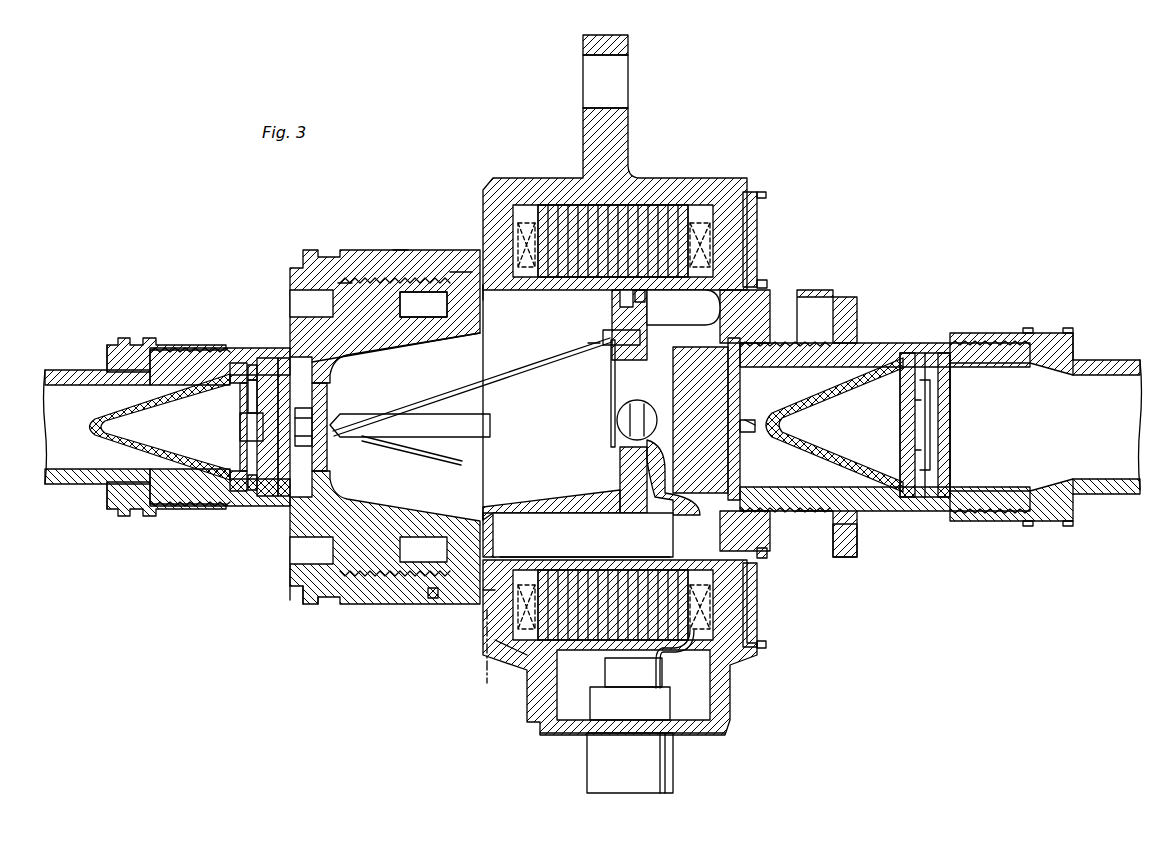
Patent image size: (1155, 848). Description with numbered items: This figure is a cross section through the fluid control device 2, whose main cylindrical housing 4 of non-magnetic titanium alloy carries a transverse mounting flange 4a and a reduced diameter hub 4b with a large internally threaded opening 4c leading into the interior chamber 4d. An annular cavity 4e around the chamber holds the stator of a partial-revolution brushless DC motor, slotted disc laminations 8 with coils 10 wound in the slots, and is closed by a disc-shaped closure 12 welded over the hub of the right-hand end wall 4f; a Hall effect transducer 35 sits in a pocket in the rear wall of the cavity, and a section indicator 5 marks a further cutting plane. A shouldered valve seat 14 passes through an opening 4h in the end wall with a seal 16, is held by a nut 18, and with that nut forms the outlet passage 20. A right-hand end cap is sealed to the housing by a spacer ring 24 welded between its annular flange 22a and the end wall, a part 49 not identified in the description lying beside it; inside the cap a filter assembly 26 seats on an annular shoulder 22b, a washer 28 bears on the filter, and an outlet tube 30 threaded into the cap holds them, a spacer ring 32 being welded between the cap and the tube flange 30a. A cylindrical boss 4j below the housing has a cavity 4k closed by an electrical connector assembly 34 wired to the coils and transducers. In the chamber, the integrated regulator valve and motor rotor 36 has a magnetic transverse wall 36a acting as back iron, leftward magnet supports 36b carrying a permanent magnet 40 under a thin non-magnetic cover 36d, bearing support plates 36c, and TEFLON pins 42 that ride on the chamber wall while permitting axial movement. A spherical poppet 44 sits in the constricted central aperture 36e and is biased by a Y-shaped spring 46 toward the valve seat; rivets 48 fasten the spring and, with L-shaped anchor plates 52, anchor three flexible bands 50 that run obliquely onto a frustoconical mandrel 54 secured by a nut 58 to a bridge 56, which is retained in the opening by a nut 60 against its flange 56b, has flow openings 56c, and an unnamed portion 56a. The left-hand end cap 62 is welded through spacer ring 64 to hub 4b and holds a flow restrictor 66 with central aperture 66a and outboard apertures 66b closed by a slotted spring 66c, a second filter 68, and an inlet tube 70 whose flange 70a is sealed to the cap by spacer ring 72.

The fluid control device 2 is at (645, 100).
The housing 4 is at (537, 178).
The mounting flange 4a is at (583, 45).
The reduced diameter hub 4b is at (400, 250).
The internally threaded opening 4c is at (345, 283).
The interior chamber 4d is at (508, 292).
The annular cavity 4e is at (762, 218).
The right-hand end wall 4f is at (762, 290).
The opening in end wall 4h is at (585, 544).
The cylindrical boss 4j is at (735, 728).
The cavity 4k is at (520, 683).
The section line 5- 5 is at (703, 177).
The circular disc laminations 8 is at (618, 212).
The coils 10 is at (708, 215).
The disc-shaped closure 12 is at (757, 240).
The valve seat 14 is at (762, 436).
The seal 16 is at (660, 385).
The nut 18 is at (734, 402).
The outlet passage 20 is at (760, 430).
The annular flange of end cap 22a is at (857, 530).
The annular shoulder 22b is at (896, 343).
The spacer ring 24 is at (815, 295).
The filter assembly 26 is at (833, 442).
The washer 28 is at (958, 353).
The outlet tube 30 is at (1107, 413).
The annular flange of outlet tube 30a is at (1077, 345).
The spacer ring 32 is at (1050, 332).
The electrical connector assembly 34 is at (587, 773).
The Hall effect transducer 35 is at (510, 645).
The integrated regulator valve and motor rotor 36 is at (497, 512).
The transverse wall 36a is at (620, 467).
The magnet supports 36b is at (516, 501).
The bearing support plates 36c is at (612, 301).
The cover 36d is at (489, 598).
The central aperture 36e is at (614, 427).
The permanent magnet 40 is at (548, 550).
The TEFLON pins 42 is at (645, 296).
The spherical poppet 44 is at (617, 420).
The Y-shaped spring 46 is at (611, 373).
The rivets 48 is at (603, 333).
The ring 49 is at (846, 303).
The flexible bands 50 is at (432, 397).
The anchor plates 52 is at (588, 345).
The mandrel 54 is at (490, 420).
The bridge 56 is at (383, 335).
The bearing plate 56a is at (330, 396).
The annular flange of bridge 56b is at (456, 272).
The openings 56c is at (288, 330).
The nut 58 is at (280, 398).
The nut 60 is at (430, 292).
The end cap 62 is at (290, 580).
The spacer ring 64 is at (318, 606).
The flow restrictor 66 is at (236, 494).
The main central aperture 66a is at (240, 427).
The outboard apertures 66b is at (252, 363).
The slotted spring 66c is at (250, 378).
The second filter assembly 68 is at (172, 378).
The inlet tube 70 is at (50, 372).
The annular flange of inlet tube 70a is at (102, 368).
The spacer ring 72 is at (128, 340).